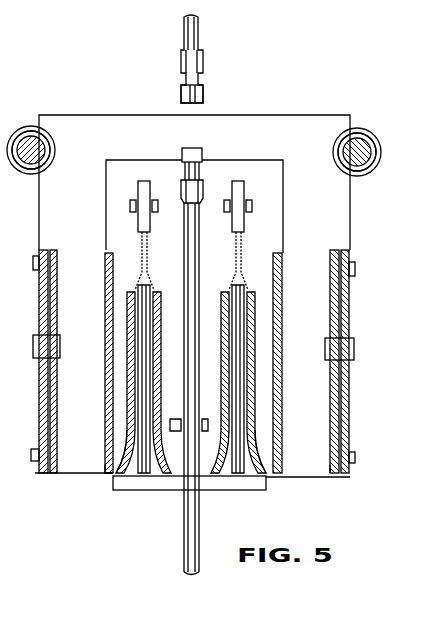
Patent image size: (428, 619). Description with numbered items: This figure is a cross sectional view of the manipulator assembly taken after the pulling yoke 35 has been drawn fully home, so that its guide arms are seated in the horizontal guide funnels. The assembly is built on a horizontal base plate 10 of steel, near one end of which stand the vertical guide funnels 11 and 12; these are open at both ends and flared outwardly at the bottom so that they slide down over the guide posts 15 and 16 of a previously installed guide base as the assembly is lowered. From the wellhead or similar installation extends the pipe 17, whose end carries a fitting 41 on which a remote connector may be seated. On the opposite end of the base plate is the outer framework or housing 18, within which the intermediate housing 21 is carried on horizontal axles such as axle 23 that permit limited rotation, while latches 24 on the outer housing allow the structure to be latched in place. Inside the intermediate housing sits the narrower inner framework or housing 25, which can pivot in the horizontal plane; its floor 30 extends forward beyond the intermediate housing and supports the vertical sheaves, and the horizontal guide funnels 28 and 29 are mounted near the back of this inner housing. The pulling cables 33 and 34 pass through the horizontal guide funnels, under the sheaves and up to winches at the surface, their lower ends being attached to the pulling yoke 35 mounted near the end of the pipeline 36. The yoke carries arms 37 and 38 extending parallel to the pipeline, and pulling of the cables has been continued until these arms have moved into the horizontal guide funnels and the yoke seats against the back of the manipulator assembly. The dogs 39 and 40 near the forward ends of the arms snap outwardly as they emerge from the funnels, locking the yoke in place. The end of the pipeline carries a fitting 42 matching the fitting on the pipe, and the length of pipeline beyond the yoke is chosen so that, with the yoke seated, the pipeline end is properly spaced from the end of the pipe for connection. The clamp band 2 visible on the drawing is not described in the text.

The clamp band 2 is at (33, 345).
The horizontal base plate 10 is at (39, 225).
The vertical guide funnel 11 is at (33, 166).
The vertical guide funnel 12 is at (377, 153).
The guide post 15 is at (33, 142).
The guide post 16 is at (362, 145).
The pipe 17 is at (198, 30).
The outer framework or housing 18 is at (350, 393).
The intermediate housing or framework 21 is at (328, 473).
The horizontal axle 23 is at (354, 348).
The latch 24 is at (34, 262).
The inner framework or housing 25 is at (104, 470).
The horizontal guide funnel 28 is at (128, 445).
The horizontal guide funnel 29 is at (250, 452).
The floor 30 is at (270, 166).
The pulling cable 33 is at (144, 181).
The pulling cable 34 is at (239, 181).
The pulling yoke 35 is at (218, 490).
The pipeline 36 is at (199, 232).
The arm 37 is at (138, 379).
The arm 38 is at (246, 395).
The dog 39 is at (133, 292).
The dog 40 is at (255, 292).
The fitting 41 is at (203, 93).
The fitting 42 is at (192, 148).